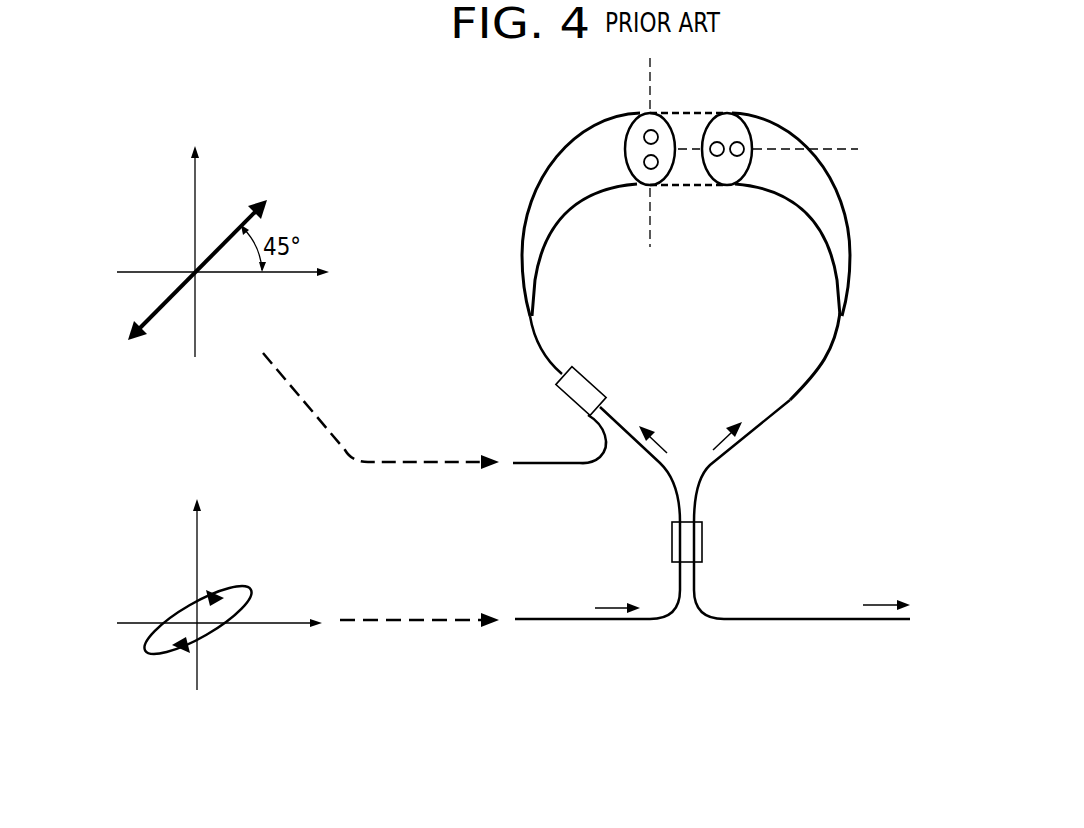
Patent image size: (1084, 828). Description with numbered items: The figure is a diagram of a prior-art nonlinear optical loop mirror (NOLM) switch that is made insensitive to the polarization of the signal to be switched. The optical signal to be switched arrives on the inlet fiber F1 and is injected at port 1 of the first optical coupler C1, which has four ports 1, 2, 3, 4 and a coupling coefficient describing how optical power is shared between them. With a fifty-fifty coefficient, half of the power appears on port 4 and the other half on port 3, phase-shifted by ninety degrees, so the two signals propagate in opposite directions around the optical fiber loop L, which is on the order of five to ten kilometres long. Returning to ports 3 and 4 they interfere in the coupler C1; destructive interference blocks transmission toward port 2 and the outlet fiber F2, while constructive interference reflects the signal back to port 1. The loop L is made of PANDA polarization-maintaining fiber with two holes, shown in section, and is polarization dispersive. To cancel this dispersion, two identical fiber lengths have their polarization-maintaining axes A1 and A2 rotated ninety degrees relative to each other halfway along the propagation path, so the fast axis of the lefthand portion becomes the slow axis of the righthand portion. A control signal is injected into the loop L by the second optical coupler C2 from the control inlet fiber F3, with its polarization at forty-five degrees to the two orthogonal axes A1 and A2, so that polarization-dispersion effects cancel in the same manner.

The optical fiber loop L is at (846, 208).
The first optical coupler C1 is at (672, 541).
The second optical coupler C2 is at (577, 400).
The inlet fiber F1 is at (392, 618).
The outlet fiber F2 is at (822, 617).
The control inlet fiber F3 is at (300, 397).
The polarization-maintaining axis A1 is at (635, 152).
The polarization-maintaining axis A2 is at (768, 139).
The port 1 is at (597, 590).
The port 2 is at (802, 590).
The port 3 is at (640, 464).
The port 4 is at (742, 461).